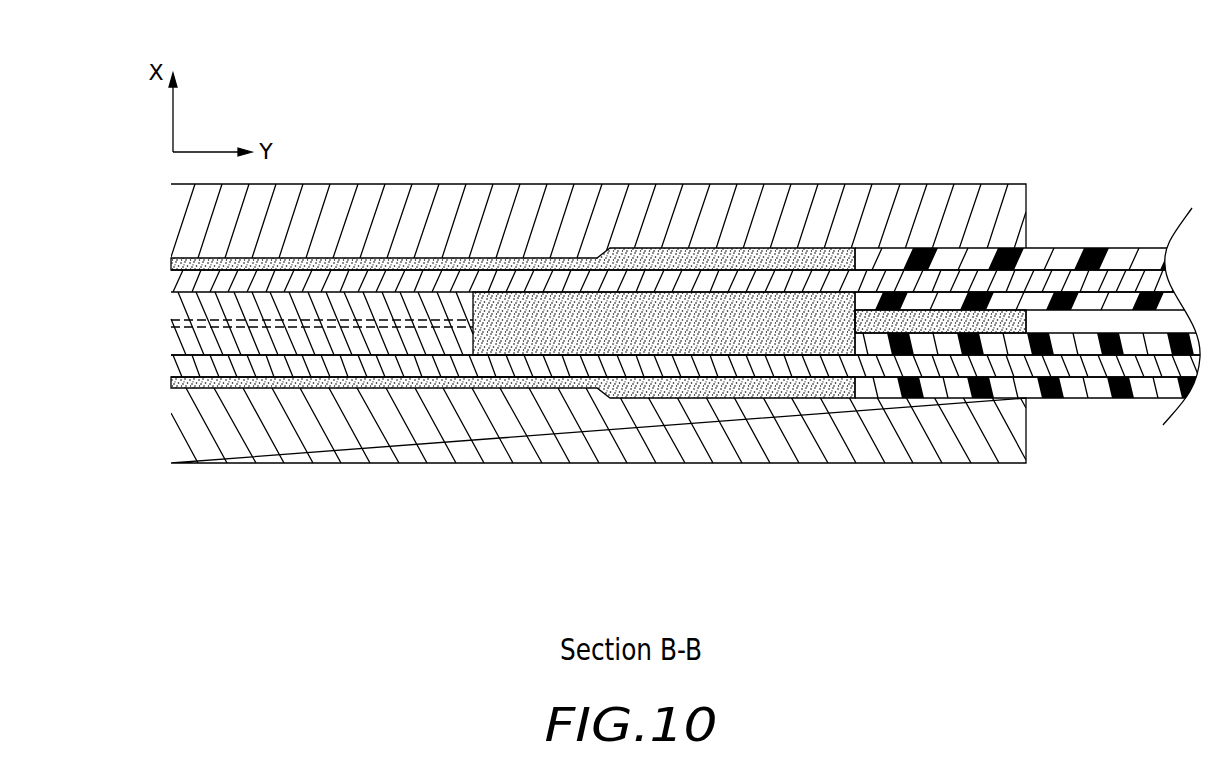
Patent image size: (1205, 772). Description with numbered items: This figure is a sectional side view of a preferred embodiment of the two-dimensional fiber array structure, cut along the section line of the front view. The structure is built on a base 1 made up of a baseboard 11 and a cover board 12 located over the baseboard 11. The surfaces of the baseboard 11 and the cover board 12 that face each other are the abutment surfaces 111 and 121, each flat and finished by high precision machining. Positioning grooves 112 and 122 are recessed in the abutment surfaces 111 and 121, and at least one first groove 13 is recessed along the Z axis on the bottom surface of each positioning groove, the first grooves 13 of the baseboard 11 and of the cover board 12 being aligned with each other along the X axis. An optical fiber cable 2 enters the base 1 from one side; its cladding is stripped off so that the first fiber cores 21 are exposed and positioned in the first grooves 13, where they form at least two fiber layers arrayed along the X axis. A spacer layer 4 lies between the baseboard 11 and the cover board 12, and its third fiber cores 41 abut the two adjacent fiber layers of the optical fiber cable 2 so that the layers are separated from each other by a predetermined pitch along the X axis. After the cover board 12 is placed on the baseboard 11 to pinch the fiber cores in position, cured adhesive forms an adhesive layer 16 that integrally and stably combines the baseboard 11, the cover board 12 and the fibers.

The base 1 is at (151, 474).
The baseboard 11 is at (213, 413).
The abutment surface 111 is at (203, 327).
The positioning groove 112 is at (237, 355).
The cover board 12 is at (212, 232).
The abutment surface 121 is at (203, 320).
The positioning groove 122 is at (243, 288).
The first groove 13 is at (290, 372).
The adhesive layer 16 is at (400, 380).
The optical fiber cable 2 is at (488, 550).
The first fiber core 21 is at (517, 370).
The spacer layer 4 is at (341, 92).
The third fiber core 41 is at (398, 302).